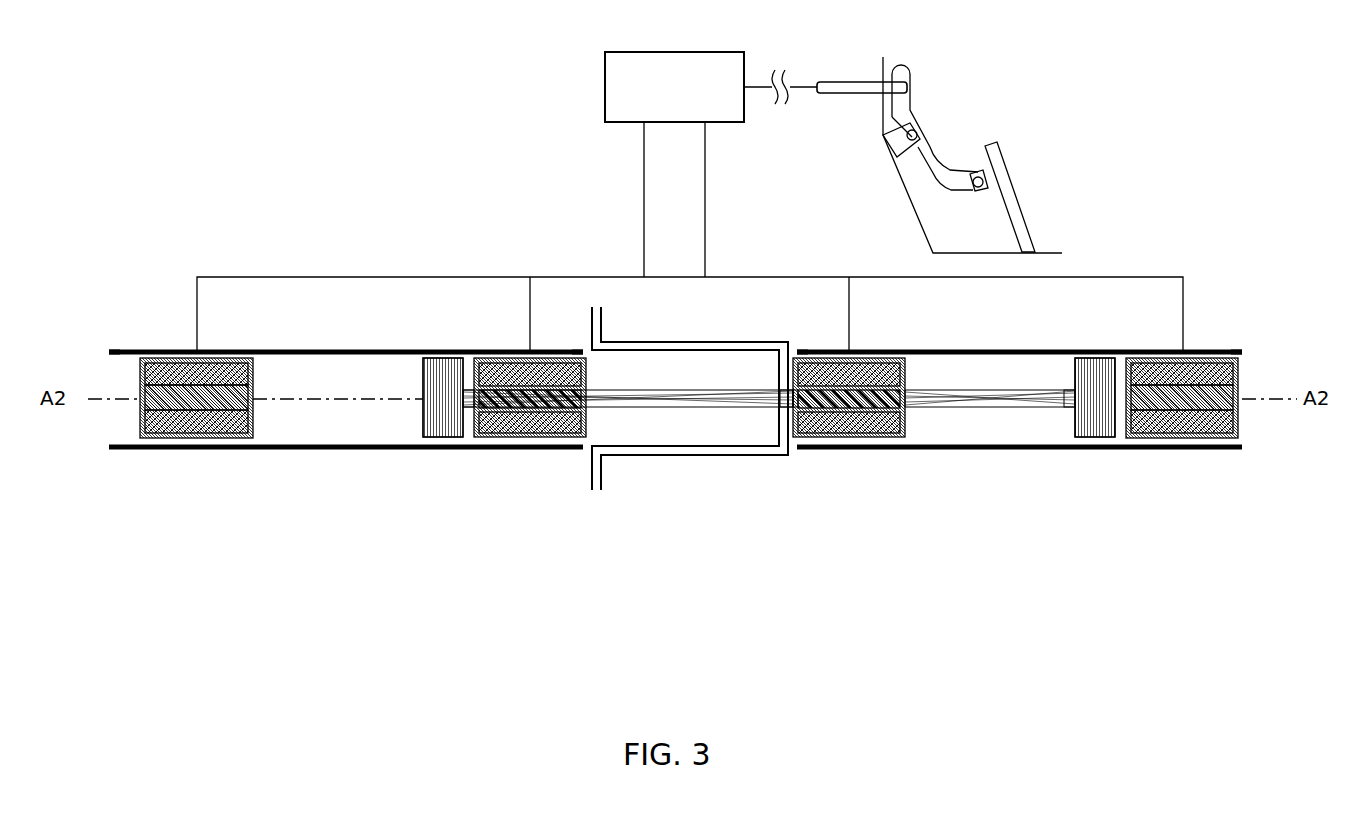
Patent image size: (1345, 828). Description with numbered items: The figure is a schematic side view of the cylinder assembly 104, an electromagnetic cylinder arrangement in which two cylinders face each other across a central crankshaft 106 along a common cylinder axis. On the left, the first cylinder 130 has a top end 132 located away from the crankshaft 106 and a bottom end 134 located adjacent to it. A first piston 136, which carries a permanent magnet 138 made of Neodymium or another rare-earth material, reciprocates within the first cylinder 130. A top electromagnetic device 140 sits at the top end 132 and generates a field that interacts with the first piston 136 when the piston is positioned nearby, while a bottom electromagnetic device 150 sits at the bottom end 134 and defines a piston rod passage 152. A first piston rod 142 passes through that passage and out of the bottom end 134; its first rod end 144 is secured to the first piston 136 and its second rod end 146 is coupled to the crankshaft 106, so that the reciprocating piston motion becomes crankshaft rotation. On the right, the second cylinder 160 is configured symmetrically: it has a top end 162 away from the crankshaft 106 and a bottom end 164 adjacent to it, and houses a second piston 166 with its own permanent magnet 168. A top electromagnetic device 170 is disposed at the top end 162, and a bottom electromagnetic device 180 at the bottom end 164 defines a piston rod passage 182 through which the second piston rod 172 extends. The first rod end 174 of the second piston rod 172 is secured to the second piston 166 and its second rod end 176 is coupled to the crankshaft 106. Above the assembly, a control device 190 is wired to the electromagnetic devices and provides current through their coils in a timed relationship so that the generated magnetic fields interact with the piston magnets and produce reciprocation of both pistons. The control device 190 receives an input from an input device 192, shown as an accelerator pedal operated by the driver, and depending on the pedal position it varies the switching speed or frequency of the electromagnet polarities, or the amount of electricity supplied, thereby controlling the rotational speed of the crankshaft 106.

The cylinder assembly 104 is at (199, 230).
The crankshaft 106 is at (679, 341).
The first cylinder 130 is at (282, 349).
The top end 132 is at (114, 342).
The bottom end 134 is at (575, 344).
The first piston 136 is at (440, 365).
The permanent magnet 138 is at (437, 418).
The top electromagnetic device 140 is at (185, 425).
The first piston rod 142 is at (672, 410).
The first rod end 144 is at (468, 414).
The second rod end 146 is at (776, 414).
The bottom electromagnetic device 150 is at (532, 427).
The piston rod passage 152 is at (510, 397).
The second cylinder 160 is at (966, 349).
The top end 162 is at (1236, 345).
The bottom end 164 is at (796, 330).
The second piston 166 is at (1095, 367).
The permanent magnet 168 is at (1094, 420).
The top electromagnetic device 170 is at (1178, 425).
The second piston rod 172 is at (937, 410).
The first rod end 174 is at (1070, 414).
The second rod end 176 is at (795, 423).
The bottom electromagnetic device 180 is at (858, 424).
The piston rod passage 182 is at (857, 397).
The control device 190 is at (642, 51).
The input device 192 is at (950, 103).